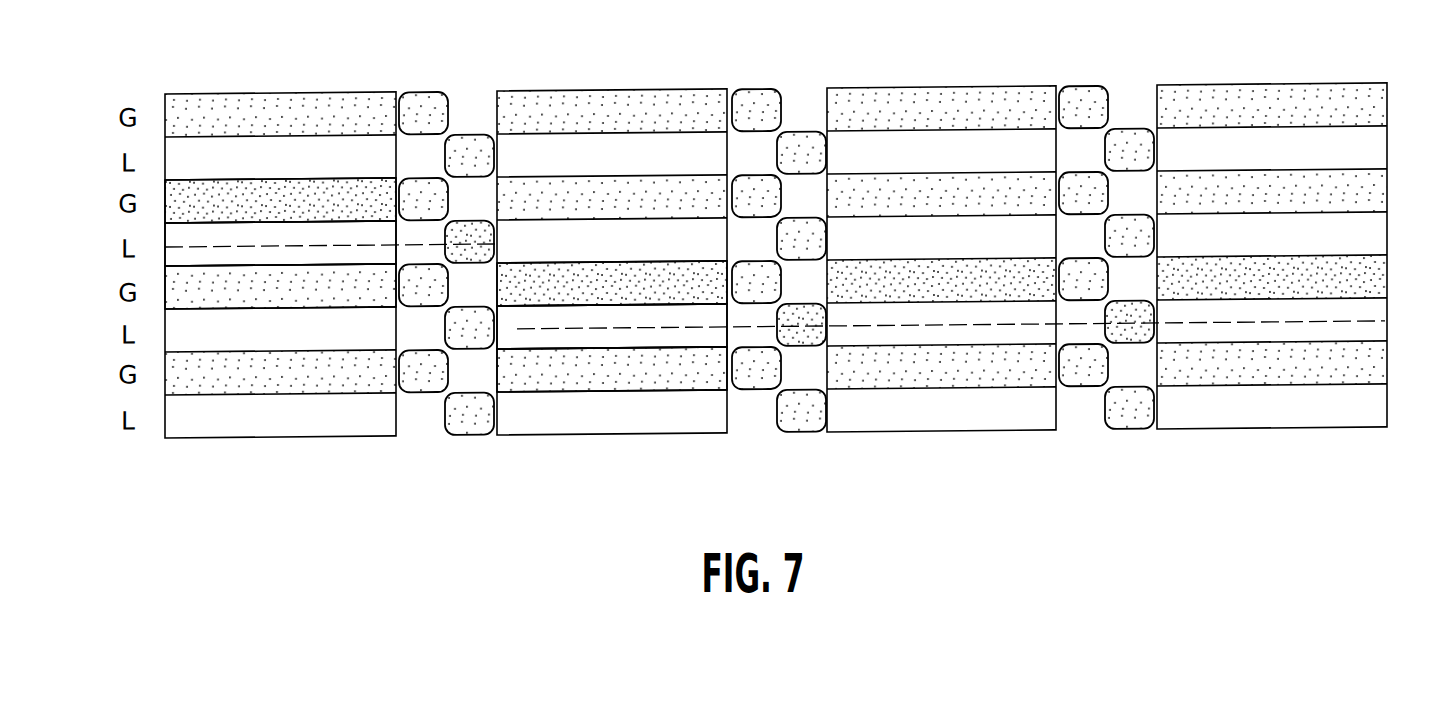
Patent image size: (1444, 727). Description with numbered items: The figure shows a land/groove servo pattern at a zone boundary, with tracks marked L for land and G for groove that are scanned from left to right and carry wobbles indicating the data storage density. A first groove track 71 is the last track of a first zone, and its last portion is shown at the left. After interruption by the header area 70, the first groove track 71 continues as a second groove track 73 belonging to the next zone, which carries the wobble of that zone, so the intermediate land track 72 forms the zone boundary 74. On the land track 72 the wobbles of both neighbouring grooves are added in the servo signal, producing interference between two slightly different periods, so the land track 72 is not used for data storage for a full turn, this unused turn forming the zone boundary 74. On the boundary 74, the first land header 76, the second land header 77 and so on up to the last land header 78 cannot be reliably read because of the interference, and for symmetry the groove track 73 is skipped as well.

The header area 70 is at (408, 453).
The first groove track 71 is at (118, 286).
The land track 72 is at (118, 248).
The second groove track 73 is at (118, 202).
The zone boundary 74 is at (1357, 332).
The first land header 76 is at (806, 352).
The second land header 77 is at (1131, 352).
The last land header 78 is at (468, 224).